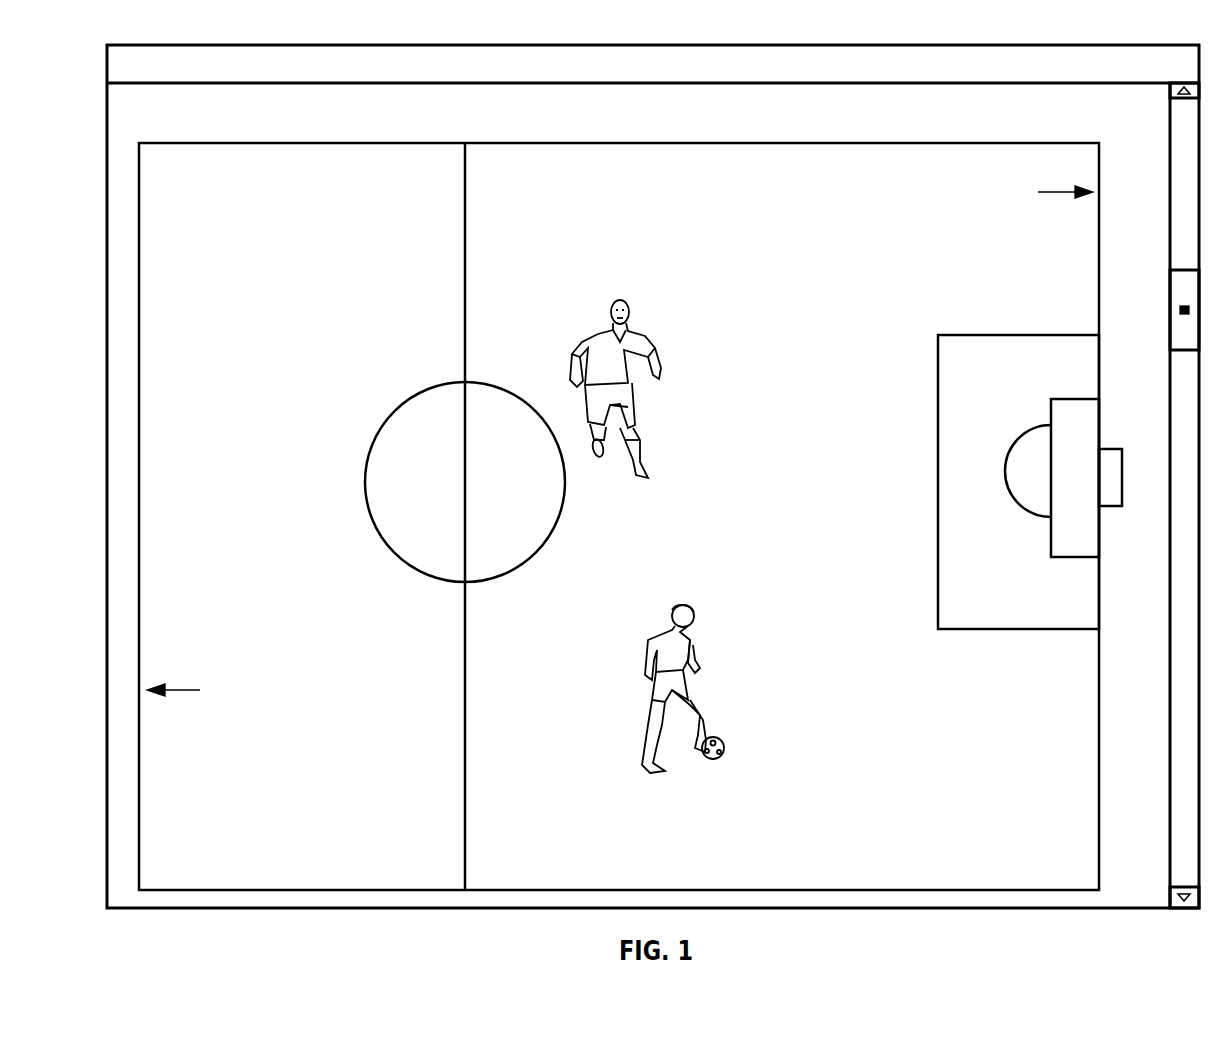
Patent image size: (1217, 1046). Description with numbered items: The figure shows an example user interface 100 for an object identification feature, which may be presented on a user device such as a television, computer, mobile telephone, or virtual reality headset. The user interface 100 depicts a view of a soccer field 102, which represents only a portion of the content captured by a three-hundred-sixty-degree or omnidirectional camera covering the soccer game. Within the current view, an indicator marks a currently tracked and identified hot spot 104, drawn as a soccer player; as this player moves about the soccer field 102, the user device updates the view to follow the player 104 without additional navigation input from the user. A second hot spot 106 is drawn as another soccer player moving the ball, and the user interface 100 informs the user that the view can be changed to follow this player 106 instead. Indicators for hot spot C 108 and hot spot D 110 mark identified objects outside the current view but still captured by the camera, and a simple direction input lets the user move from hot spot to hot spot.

The user interface 100 is at (653, 476).
The soccer field 102 is at (630, 516).
The currently tracked hot spot 104 is at (538, 336).
The additional hot spot 106 is at (605, 762).
The hot spot C 108 is at (264, 672).
The hot spot D 110 is at (865, 167).